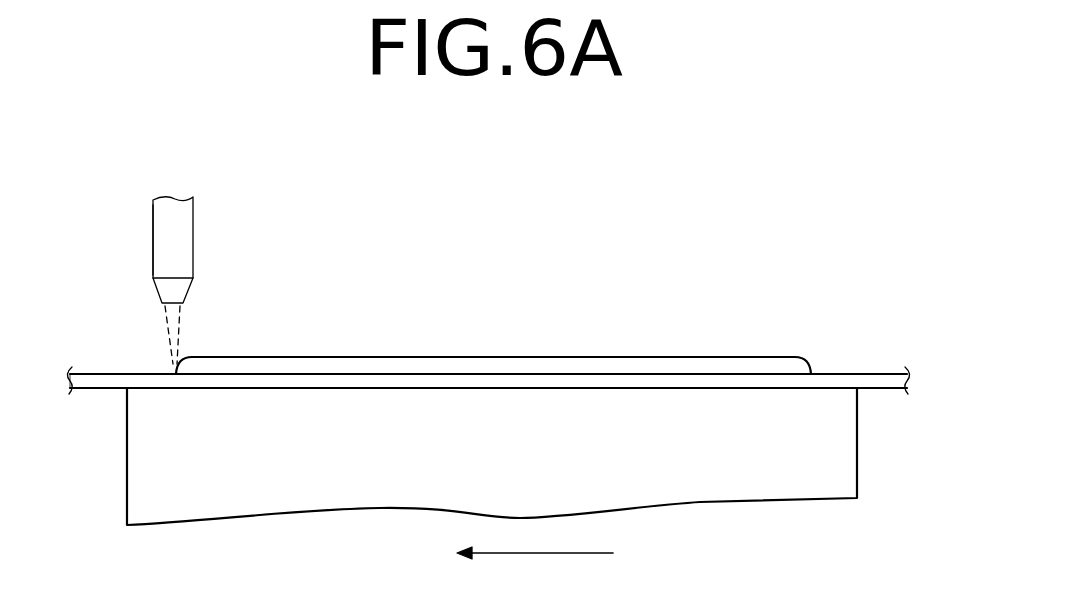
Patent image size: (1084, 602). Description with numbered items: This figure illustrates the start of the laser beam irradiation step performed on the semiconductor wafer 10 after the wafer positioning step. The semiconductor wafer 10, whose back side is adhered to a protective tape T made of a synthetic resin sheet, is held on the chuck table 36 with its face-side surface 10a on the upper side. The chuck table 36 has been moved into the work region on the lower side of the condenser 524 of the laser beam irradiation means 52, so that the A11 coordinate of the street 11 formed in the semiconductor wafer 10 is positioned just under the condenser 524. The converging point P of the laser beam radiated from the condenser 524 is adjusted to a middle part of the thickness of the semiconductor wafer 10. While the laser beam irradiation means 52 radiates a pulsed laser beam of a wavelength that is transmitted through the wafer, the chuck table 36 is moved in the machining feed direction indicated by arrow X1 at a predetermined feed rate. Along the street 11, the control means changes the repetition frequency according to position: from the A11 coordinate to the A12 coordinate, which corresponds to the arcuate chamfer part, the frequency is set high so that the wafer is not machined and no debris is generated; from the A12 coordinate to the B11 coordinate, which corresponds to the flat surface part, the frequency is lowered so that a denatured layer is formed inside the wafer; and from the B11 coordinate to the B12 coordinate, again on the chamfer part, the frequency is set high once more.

The street 11 is at (845, 350).
The semiconductor wafer 10 is at (525, 358).
The face-side surface 10a is at (612, 356).
The laser beam irradiation means 52 is at (207, 212).
The condenser 524 is at (187, 238).
The A11 coordinate A11 is at (172, 368).
The A12 coordinate A12 is at (182, 368).
The converging point P is at (170, 371).
The B11 coordinate B11 is at (805, 362).
The B12 coordinate B12 is at (811, 371).
The protective tape T is at (97, 390).
The chuck table 36 is at (845, 453).
The machining feed direction X1 is at (515, 553).